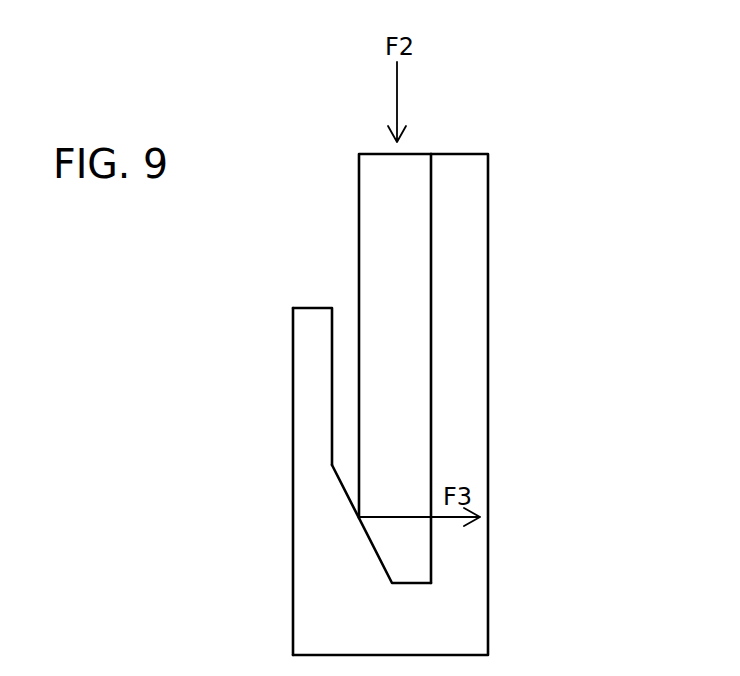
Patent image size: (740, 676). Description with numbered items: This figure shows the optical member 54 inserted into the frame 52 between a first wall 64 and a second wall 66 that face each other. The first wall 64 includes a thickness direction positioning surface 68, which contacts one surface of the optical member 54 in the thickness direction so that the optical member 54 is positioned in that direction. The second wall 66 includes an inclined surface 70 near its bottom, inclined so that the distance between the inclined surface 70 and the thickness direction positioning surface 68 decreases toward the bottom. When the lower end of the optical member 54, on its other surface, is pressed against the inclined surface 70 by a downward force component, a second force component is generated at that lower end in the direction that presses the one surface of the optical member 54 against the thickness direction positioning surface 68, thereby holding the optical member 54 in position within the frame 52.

The frame 52 is at (490, 611).
The optical member 54 is at (380, 228).
The first wall 64 is at (480, 252).
The second wall 66 is at (300, 384).
The thickness direction positioning surface 68 is at (428, 397).
The inclined surface 70 is at (381, 566).